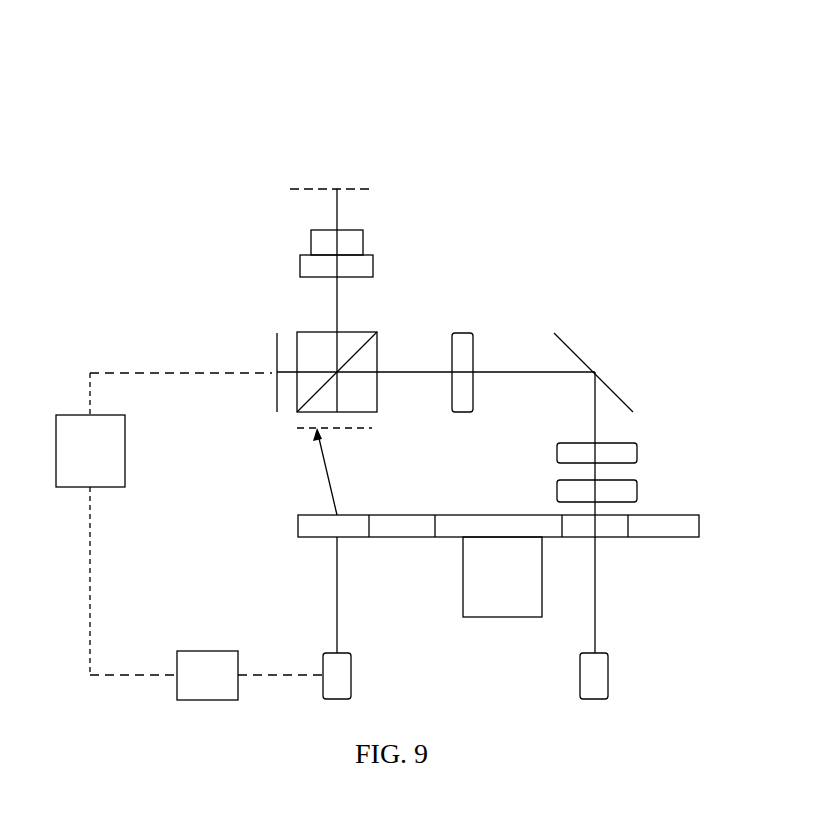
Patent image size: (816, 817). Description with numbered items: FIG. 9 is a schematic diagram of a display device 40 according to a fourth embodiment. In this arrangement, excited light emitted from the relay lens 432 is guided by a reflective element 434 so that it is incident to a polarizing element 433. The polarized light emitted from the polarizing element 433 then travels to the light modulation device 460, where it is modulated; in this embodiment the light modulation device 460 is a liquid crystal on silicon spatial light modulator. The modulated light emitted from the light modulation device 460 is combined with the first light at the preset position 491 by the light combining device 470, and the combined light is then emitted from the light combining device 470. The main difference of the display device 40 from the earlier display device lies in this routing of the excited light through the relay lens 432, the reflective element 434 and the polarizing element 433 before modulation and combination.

The display device 40 is at (367, 99).
The light modulation device 460 is at (272, 353).
The light combining device 470 is at (362, 332).
The polarizing element 433 is at (462, 333).
The reflective element 434 is at (605, 380).
The relay lens 432 is at (638, 453).
The preset position 491 is at (347, 430).